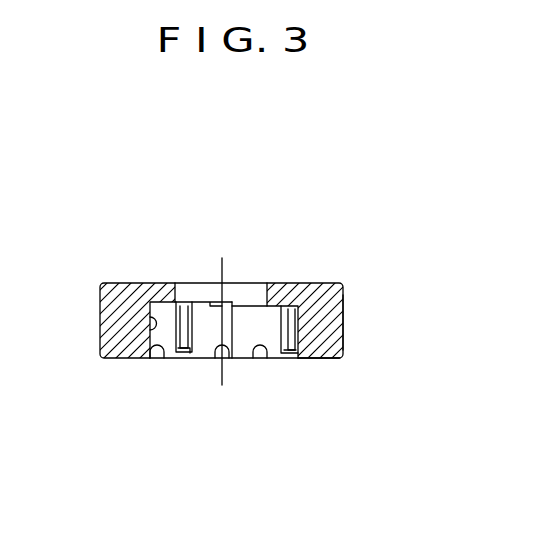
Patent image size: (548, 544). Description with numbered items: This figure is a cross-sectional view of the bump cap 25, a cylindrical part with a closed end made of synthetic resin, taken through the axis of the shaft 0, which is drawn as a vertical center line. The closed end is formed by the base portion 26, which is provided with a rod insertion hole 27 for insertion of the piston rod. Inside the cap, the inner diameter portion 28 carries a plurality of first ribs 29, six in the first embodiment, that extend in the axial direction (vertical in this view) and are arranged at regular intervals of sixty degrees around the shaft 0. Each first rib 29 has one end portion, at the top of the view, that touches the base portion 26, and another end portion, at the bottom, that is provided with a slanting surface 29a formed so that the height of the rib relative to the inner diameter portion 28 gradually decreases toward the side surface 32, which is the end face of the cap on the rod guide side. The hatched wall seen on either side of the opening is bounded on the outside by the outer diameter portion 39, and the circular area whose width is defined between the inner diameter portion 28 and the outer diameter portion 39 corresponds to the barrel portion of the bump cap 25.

The shaft 0 is at (222, 277).
The bump cap 25 is at (364, 266).
The base portion 26 is at (160, 283).
The rod insertion hole 27 is at (267, 305).
The inner diameter portion 28 is at (247, 318).
The first rib 29 is at (150, 316).
The slanting surface 29a is at (150, 360).
The side surface 32 is at (327, 358).
The outer diameter portion 39 is at (345, 317).